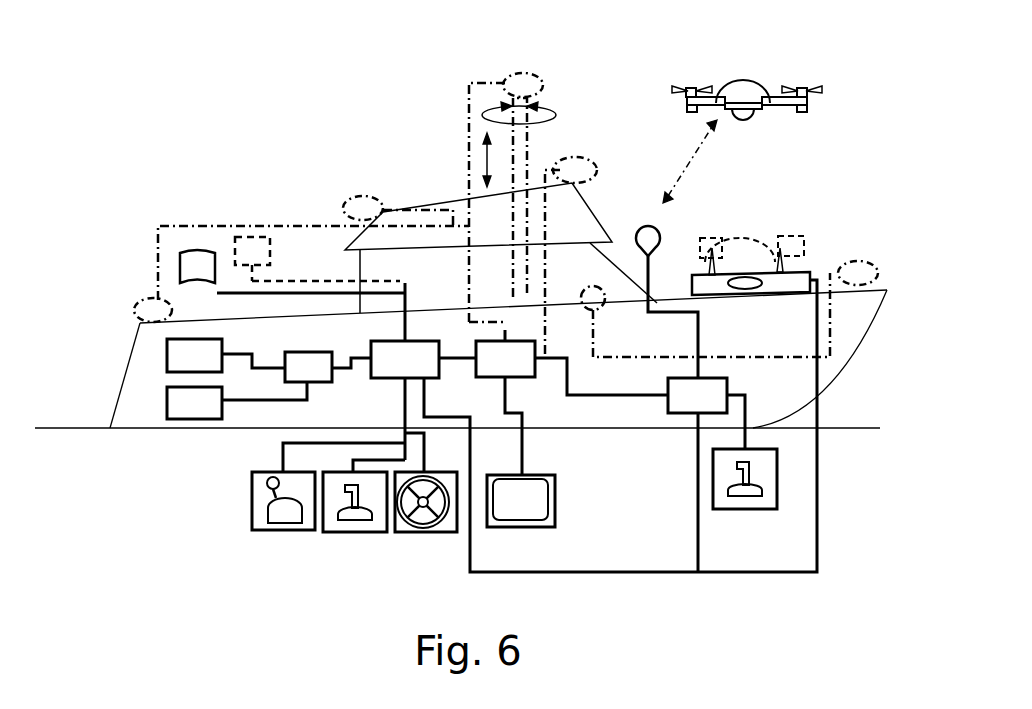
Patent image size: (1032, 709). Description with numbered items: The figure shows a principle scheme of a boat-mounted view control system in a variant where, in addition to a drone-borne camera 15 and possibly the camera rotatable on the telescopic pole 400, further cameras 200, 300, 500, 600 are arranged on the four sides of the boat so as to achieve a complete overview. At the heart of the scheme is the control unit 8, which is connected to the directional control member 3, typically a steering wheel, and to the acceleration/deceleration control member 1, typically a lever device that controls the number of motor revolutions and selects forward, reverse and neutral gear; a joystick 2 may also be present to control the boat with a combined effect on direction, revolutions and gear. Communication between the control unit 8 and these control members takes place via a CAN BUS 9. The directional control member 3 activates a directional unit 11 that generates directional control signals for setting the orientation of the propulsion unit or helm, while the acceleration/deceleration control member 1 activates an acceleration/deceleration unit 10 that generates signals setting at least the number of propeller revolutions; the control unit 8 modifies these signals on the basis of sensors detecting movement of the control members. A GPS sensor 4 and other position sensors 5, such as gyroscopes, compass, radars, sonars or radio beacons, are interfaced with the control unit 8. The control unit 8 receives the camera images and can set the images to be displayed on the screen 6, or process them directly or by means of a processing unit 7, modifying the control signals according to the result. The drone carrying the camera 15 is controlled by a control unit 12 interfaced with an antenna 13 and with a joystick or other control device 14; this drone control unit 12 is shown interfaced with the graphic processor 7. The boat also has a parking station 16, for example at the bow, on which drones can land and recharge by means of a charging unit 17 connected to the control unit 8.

The acceleration/deceleration control member 1 is at (262, 505).
The joystick 2 is at (372, 523).
The directional control member 3 is at (422, 527).
The GPS sensor 4 is at (190, 268).
The position sensors 5 is at (252, 240).
The screen 6 is at (540, 513).
The processing unit 7 is at (510, 368).
The control unit 8 is at (380, 345).
The CAN BUS 9 is at (317, 370).
The acceleration/deceleration unit 10 is at (172, 362).
The directional unit 11 is at (178, 413).
The control unit of the drone 12 is at (678, 405).
The antenna 13 is at (650, 230).
The control device 14 is at (757, 502).
The camera 15 is at (764, 119).
The parking station 16 is at (708, 302).
The charging unit 17 is at (762, 296).
The camera 200 is at (358, 202).
The camera 300 is at (572, 158).
The central telescopic camera 400 is at (523, 80).
The camera 500 is at (860, 262).
The camera 600 is at (143, 303).